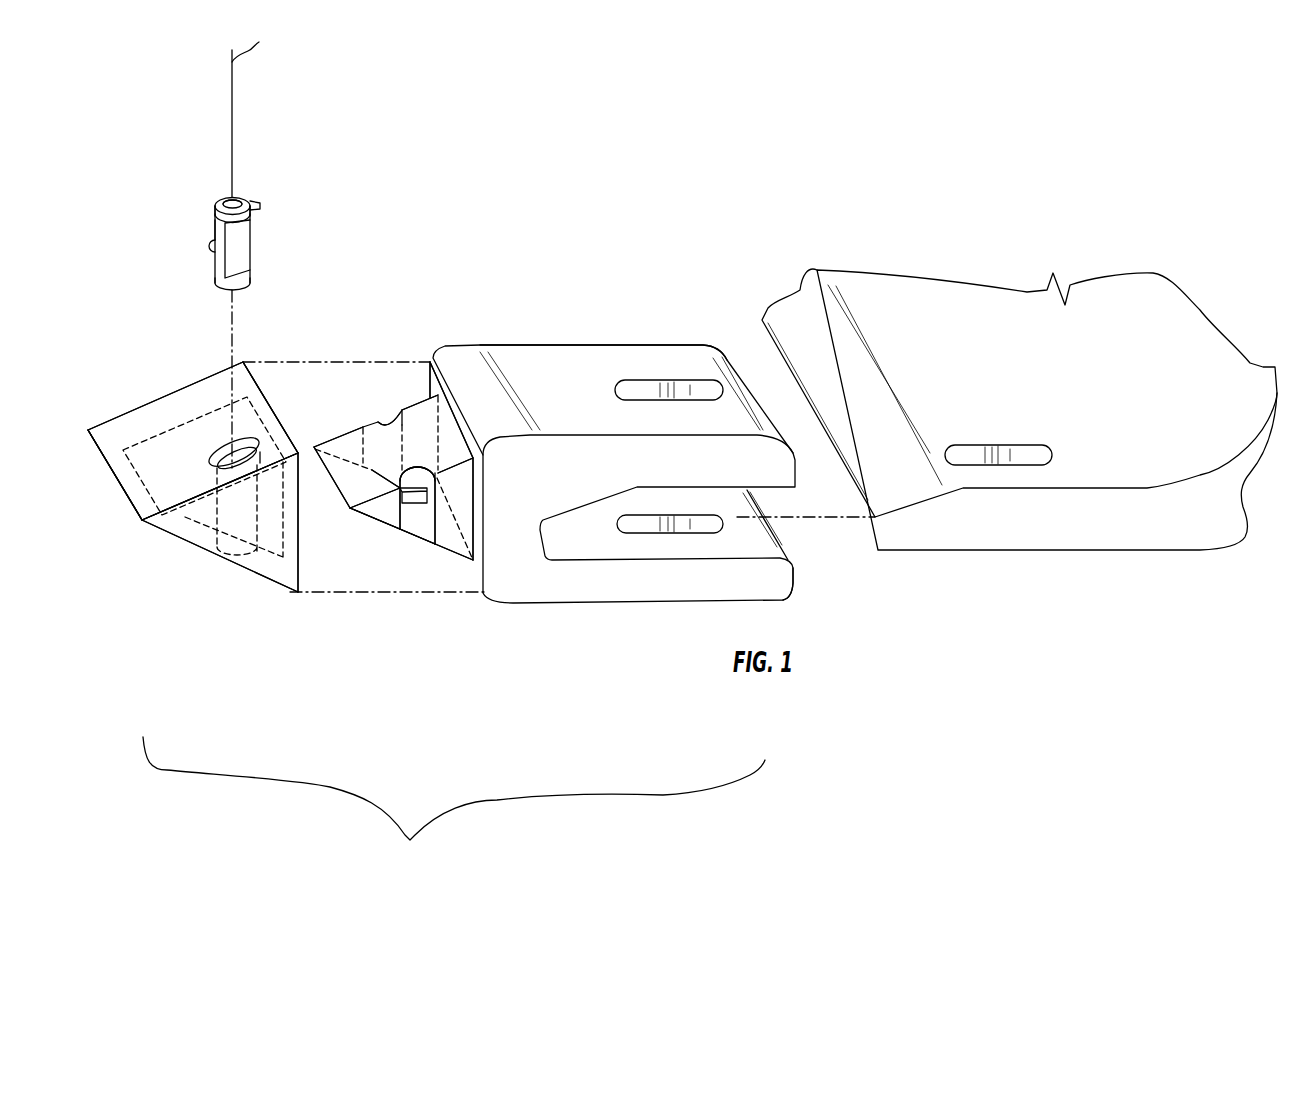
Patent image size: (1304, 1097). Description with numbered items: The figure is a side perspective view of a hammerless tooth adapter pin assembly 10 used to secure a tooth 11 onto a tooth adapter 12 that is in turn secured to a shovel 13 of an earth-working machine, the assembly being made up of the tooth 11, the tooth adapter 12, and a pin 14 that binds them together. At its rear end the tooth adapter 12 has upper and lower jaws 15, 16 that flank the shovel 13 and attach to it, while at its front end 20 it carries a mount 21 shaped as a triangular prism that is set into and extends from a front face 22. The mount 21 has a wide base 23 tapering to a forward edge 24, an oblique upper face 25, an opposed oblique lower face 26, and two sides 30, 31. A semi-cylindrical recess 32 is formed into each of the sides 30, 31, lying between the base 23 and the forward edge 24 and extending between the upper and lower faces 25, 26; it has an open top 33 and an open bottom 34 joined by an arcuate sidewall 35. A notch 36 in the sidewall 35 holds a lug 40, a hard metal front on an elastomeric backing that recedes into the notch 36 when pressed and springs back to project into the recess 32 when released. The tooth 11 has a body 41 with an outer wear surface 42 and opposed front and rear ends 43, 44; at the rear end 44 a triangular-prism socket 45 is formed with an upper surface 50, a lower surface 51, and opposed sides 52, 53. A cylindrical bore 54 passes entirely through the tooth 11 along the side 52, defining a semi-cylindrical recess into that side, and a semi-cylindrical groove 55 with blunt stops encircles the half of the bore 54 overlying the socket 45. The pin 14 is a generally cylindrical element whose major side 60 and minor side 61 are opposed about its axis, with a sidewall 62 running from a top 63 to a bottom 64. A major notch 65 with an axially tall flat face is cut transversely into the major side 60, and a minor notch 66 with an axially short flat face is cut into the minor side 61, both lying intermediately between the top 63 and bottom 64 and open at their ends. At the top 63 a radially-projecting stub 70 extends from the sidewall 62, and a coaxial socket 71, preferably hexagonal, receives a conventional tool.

The hammerless tooth adapter pin assembly 10 is at (454, 813).
The tooth 11 is at (259, 453).
The tooth adapter 12 is at (654, 447).
The shovel 13 is at (965, 310).
The pin 14 is at (254, 167).
The upper jaw 15 is at (720, 358).
The lower jaw 16 is at (797, 583).
The front end 20 is at (409, 459).
The mount 21 is at (418, 408).
The front face 22 is at (473, 573).
The base 23 is at (467, 433).
The forward edge 24 is at (348, 503).
The upper face 25 is at (343, 443).
The lower face 26 is at (373, 520).
The side 30 is at (468, 482).
The side 31 is at (325, 445).
The recess 32 is at (385, 424).
The open top 33 is at (423, 453).
The open bottom 34 is at (403, 518).
The sidewall 35 is at (425, 520).
The notch 36 is at (372, 471).
The lug 40 is at (419, 513).
The body 41 is at (217, 383).
The outer wear surface 42 is at (131, 517).
The front end 43 is at (137, 524).
The rear end 44 is at (262, 368).
The socket 45 is at (290, 408).
The upper surface 50 is at (163, 447).
The lower surface 51 is at (193, 508).
The side 52 is at (275, 520).
The side 53 is at (138, 495).
The bore 54 is at (242, 438).
The groove 55 is at (235, 443).
The major side 60 is at (258, 219).
The minor side 61 is at (215, 227).
The sidewall 62 is at (215, 218).
The top 63 is at (236, 198).
The bottom 64 is at (209, 288).
The major notch 65 is at (247, 252).
The minor notch 66 is at (212, 248).
The stub 70 is at (262, 199).
The socket 71 is at (229, 199).